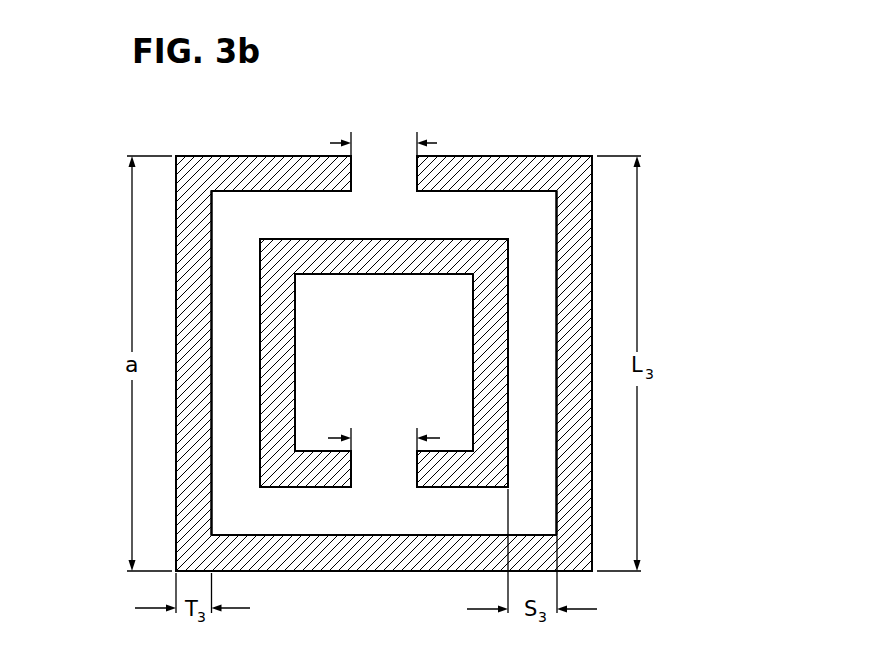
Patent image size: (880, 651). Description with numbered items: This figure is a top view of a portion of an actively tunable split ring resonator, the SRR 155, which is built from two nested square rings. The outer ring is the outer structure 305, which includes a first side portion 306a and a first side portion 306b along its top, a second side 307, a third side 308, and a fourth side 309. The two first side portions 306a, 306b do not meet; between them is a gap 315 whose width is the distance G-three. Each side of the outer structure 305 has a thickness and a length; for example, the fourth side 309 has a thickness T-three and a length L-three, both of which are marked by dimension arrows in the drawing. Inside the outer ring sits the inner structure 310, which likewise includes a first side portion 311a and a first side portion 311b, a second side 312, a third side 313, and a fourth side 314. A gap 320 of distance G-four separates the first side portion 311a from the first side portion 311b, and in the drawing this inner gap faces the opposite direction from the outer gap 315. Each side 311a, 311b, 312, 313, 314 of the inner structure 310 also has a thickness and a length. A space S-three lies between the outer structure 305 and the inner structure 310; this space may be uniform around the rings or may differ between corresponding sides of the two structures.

The SRR 155 is at (339, 84).
The outer structure 305 is at (583, 245).
The first side portion 306a is at (542, 156).
The first side portion 306b is at (222, 156).
The second side 307 is at (593, 407).
The third side 308 is at (364, 572).
The fourth side 309 is at (177, 405).
The inner structure 310 is at (458, 239).
The first side portion 311a is at (302, 450).
The first side portion 311b is at (465, 450).
The second side 312 is at (296, 342).
The third side 313 is at (363, 275).
The fourth side 314 is at (472, 338).
The gap 315 is at (417, 131).
The gap 320 is at (417, 426).